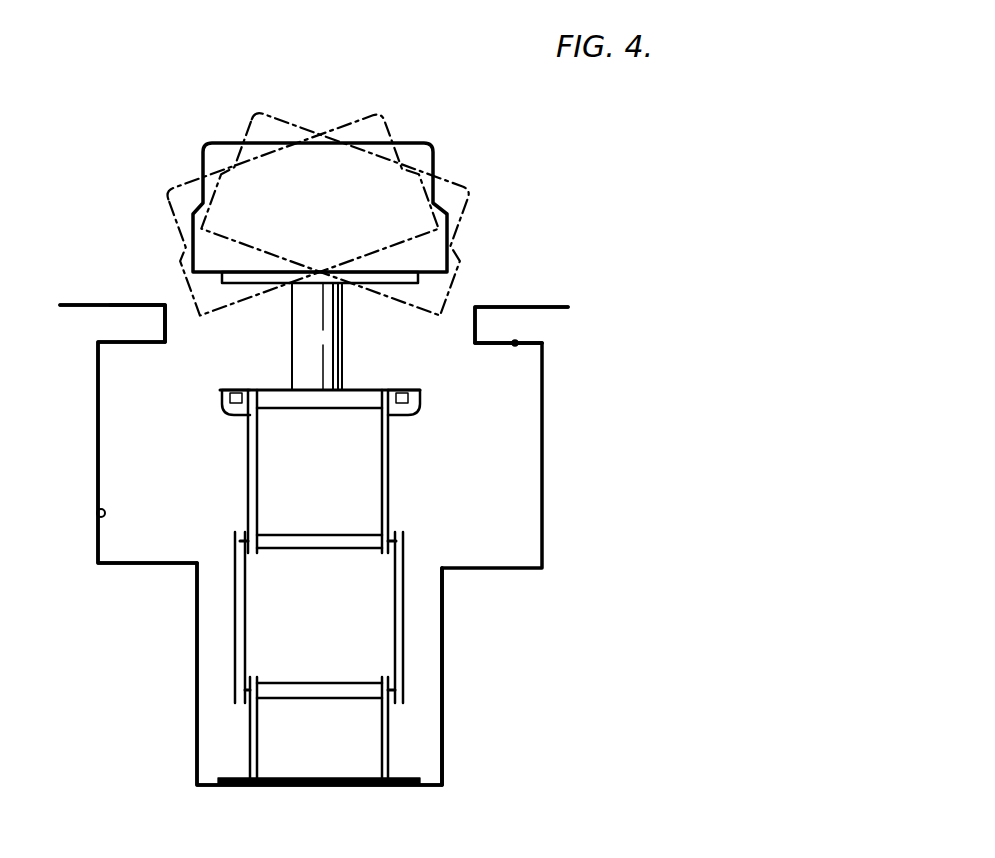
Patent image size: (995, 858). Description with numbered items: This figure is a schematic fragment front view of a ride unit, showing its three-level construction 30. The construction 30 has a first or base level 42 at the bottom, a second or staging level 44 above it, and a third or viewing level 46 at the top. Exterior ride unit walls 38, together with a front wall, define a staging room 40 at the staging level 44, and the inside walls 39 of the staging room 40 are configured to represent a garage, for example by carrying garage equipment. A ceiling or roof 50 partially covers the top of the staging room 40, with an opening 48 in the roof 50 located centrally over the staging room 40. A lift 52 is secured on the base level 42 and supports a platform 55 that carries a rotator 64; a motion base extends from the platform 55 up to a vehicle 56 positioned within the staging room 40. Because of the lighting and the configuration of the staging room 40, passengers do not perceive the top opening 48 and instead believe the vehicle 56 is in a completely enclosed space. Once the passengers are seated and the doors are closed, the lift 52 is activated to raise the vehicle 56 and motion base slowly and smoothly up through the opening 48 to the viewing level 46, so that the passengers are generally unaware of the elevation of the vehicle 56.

The 3-level construction 30 is at (560, 492).
The exterior ride unit walls 38 is at (85, 460).
The inside walls 39 is at (98, 519).
The staging room 40 is at (493, 454).
The first or base level 42 is at (430, 787).
The second or staging level 44 is at (493, 570).
The third or viewing level 46 is at (520, 307).
The opening 48 is at (178, 298).
The ceiling or roof 50 is at (515, 346).
The lift 52 is at (247, 470).
The platform 55 is at (228, 392).
The vehicle 56 is at (210, 152).
The rotator 64 is at (348, 378).